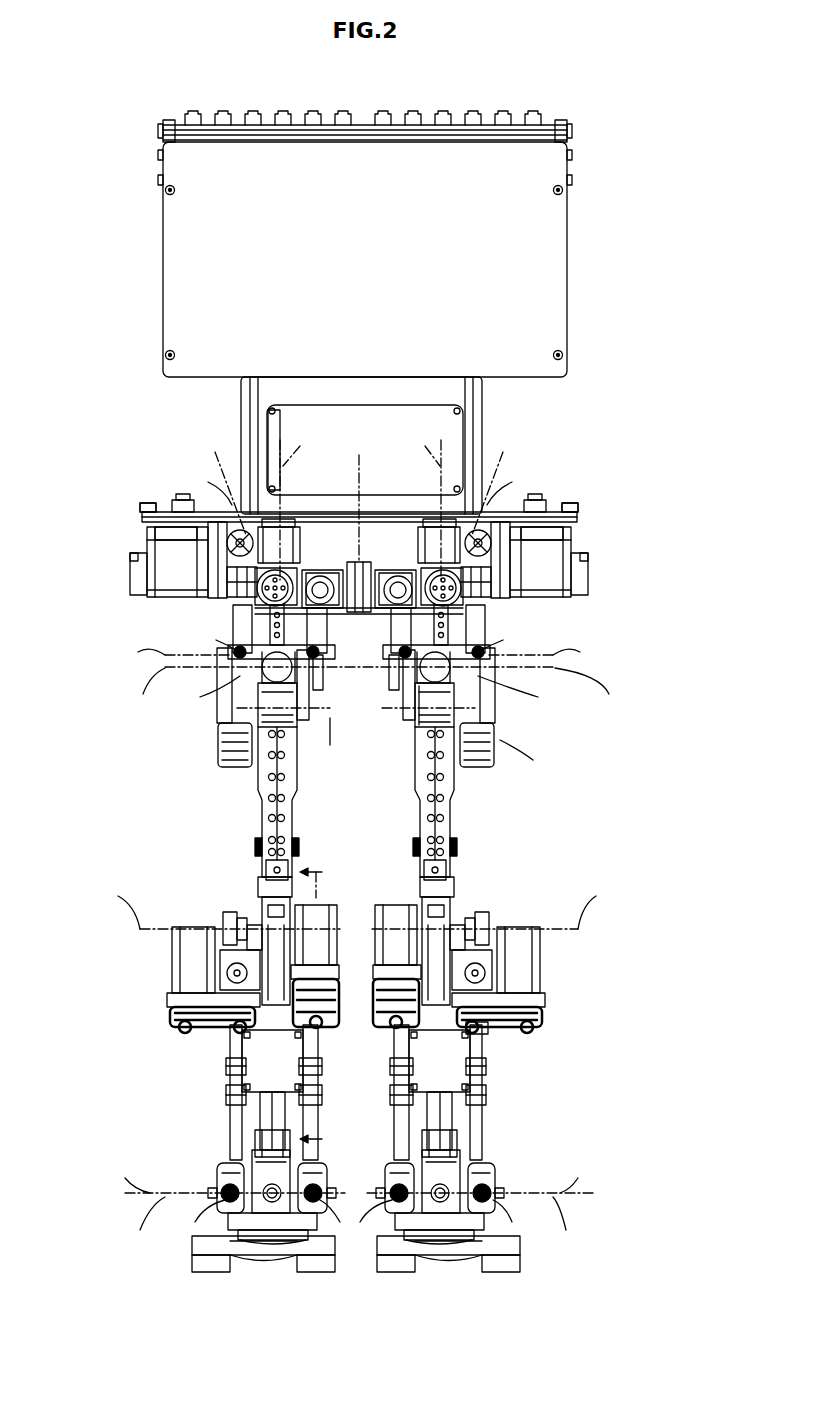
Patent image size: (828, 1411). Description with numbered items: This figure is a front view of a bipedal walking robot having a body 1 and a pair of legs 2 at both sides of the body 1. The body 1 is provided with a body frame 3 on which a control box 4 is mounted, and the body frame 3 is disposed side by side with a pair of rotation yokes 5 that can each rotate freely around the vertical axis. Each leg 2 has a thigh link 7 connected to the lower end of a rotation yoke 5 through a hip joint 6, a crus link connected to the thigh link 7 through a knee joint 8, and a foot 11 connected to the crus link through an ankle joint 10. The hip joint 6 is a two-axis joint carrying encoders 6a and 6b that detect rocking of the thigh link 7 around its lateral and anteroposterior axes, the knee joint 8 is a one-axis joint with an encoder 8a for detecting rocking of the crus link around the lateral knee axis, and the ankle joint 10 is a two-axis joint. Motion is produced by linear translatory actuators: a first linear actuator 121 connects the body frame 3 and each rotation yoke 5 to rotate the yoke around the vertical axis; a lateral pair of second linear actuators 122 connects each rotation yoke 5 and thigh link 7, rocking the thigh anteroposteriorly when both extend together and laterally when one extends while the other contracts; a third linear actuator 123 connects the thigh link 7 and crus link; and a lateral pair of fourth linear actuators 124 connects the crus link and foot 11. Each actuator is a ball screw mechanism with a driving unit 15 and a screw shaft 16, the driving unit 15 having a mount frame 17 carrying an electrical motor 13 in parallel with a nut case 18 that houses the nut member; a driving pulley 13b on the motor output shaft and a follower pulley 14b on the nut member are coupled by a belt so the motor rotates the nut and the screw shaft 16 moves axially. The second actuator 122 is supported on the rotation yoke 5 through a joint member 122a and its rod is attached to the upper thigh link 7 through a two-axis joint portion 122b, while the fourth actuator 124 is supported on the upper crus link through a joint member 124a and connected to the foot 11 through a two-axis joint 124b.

The body 1 is at (148, 336).
The leg 2 is at (250, 841).
The body frame 3 is at (240, 416).
The control box 4 is at (163, 238).
The rotation yoke 5 is at (262, 630).
The hip joint 6 is at (414, 698).
The encoder 6a is at (458, 690).
The encoder 6b is at (418, 712).
The thigh link 7 is at (412, 792).
The knee joint 8 is at (256, 906).
The encoder 8a is at (224, 918).
The ankle joint 10 is at (268, 1168).
The foot 11 is at (192, 1248).
The first linear (translatory) actuator 121 is at (313, 562).
The second linear (translatory) actuator 122 is at (140, 518).
The joint member 122a is at (216, 577).
The 2-axis joint portion 122b is at (300, 672).
The third linear (translatory) actuator 123 is at (221, 774).
The fourth linear (translatory) actuator 124 is at (171, 1014).
The joint member 124a is at (482, 1032).
The 2-axis joint 124b is at (322, 1172).
The electrical motor 13 is at (170, 560).
The driving pulley 13b is at (240, 586).
The follower pulley 14b is at (359, 565).
The driving unit 15 is at (145, 504).
The screw shaft 16 is at (234, 1050).
The mount frame 17 is at (384, 652).
The nut case 18 is at (210, 566).